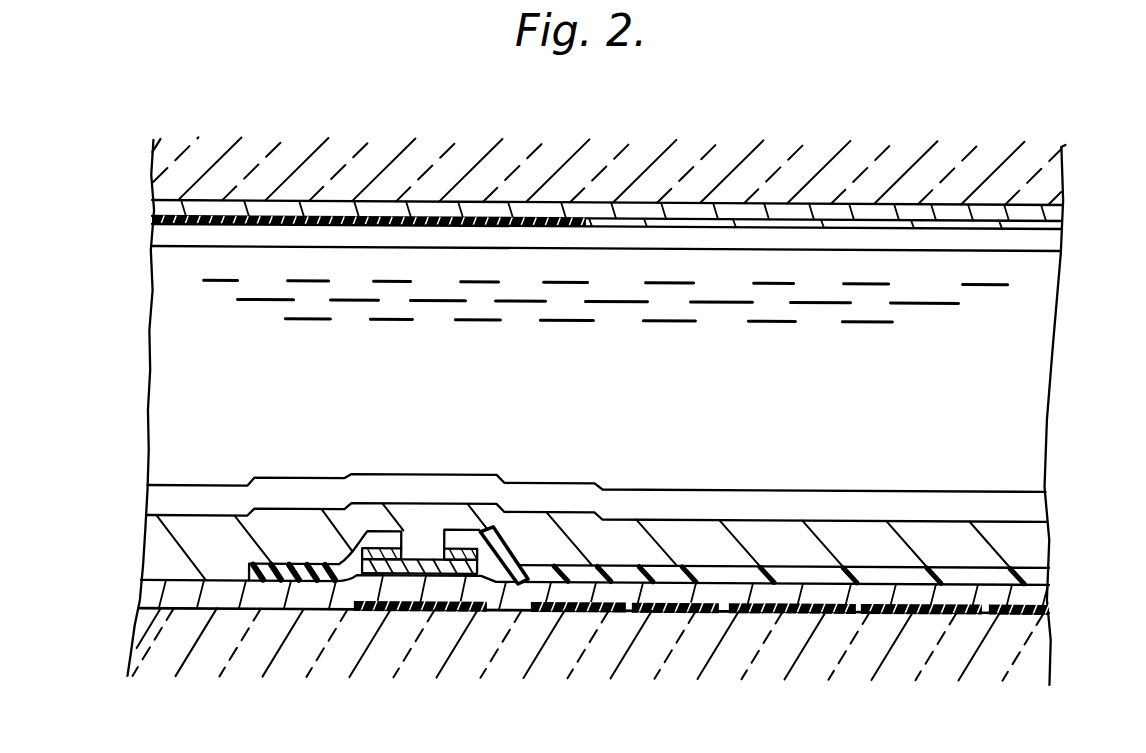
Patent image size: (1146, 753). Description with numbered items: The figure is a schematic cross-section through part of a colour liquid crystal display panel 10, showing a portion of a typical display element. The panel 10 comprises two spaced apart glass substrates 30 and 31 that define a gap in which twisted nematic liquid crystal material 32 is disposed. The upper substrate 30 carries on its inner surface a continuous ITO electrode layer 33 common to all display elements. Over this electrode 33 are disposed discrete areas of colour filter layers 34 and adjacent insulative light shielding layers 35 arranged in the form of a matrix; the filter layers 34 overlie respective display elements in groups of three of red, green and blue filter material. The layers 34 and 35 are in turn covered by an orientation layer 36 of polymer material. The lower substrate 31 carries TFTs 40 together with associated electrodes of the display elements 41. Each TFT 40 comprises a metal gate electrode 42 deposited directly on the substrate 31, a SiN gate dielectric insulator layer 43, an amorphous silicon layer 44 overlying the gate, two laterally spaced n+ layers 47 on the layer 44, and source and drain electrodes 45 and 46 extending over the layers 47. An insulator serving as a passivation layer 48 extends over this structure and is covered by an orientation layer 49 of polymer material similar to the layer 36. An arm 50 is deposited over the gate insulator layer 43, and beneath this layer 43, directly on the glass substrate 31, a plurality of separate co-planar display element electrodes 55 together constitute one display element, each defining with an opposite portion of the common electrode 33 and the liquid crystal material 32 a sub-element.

The panel 10 is at (462, 128).
The upper glass substrate 30 is at (167, 157).
The lower glass substrate 31 is at (1040, 637).
The twisted nematic liquid crystal material 32 is at (1035, 378).
The ITO electrode layer 33 is at (876, 211).
The colour filter layers 34 is at (1033, 225).
The light shielding layers 35 is at (177, 223).
The orientation layer 36 is at (202, 236).
The TFT 40 is at (429, 624).
The associated electrodes of the display elements 41 is at (784, 624).
The metal gate electrode 42 is at (396, 611).
The gate dielectric insulator layer 43 is at (324, 592).
The amorphous silicon layer 44 is at (468, 567).
The source electrode 45 is at (365, 531).
The drain electrode 46 is at (523, 575).
The n+ layers 47 is at (400, 552).
The passivation layer 48 is at (165, 548).
The orientation layer 49 is at (1028, 502).
The arm 50 is at (1028, 573).
The display element electrodes 55 is at (619, 611).